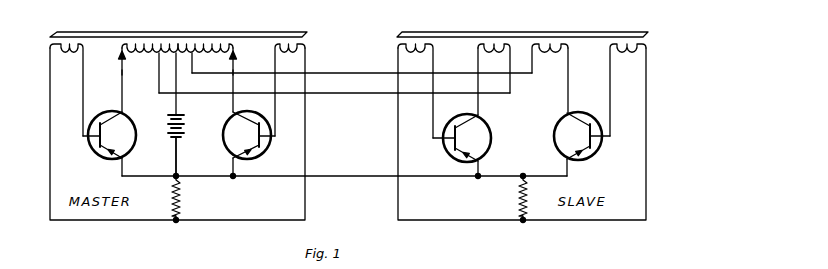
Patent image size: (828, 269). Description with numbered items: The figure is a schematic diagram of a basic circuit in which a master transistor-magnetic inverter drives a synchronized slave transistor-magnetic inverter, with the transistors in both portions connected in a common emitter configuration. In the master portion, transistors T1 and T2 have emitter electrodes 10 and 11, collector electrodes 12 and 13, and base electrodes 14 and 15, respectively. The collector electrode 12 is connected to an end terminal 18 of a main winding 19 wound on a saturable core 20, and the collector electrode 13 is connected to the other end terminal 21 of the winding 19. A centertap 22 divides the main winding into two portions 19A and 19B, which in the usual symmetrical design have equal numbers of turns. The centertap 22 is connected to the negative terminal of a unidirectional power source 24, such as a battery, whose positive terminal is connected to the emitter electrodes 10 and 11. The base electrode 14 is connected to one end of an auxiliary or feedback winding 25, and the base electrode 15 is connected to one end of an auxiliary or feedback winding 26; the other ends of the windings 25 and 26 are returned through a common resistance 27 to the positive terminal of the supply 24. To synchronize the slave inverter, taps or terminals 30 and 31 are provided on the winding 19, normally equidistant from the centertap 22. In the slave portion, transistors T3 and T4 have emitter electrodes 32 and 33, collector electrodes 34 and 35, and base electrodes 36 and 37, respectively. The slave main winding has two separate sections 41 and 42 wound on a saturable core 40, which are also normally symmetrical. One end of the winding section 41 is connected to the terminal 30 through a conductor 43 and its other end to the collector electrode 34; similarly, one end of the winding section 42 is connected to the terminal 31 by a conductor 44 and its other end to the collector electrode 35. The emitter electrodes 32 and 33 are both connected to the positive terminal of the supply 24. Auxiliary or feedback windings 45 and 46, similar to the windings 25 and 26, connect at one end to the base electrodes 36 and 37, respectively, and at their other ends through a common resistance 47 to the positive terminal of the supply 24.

The emitter electrode 10 is at (113, 161).
The emitter electrode 11 is at (247, 164).
The collector electrode 12 is at (118, 107).
The collector electrode 13 is at (240, 113).
The base electrode 14 is at (98, 122).
The base electrode 15 is at (273, 140).
The end terminal 18 is at (119, 56).
The main winding 19 is at (176, 43).
The winding portion 19A is at (149, 60).
The winding portion 19B is at (196, 57).
The saturable core 20 is at (221, 30).
The end terminal 21 is at (237, 54).
The centertap 22 is at (166, 83).
The unidirectional power source 24 is at (183, 139).
The auxiliary or feedback winding 25 is at (66, 54).
The auxiliary or feedback winding 26 is at (291, 52).
The common resistance 27 is at (182, 198).
The terminal 30 is at (158, 72).
The terminal 31 is at (192, 63).
The emitter electrode 32 is at (462, 158).
The emitter electrode 33 is at (579, 166).
The collector electrode 34 is at (470, 110).
The collector electrode 35 is at (585, 109).
The base electrode 36 is at (435, 135).
The base electrode 37 is at (602, 134).
The saturable core 40 is at (539, 34).
The winding section 41 is at (497, 55).
The winding section 42 is at (553, 55).
The conductor 43 is at (353, 95).
The conductor 44 is at (360, 72).
The auxiliary or feedback winding 45 is at (422, 54).
The auxiliary or feedback winding 46 is at (636, 57).
The common resistance 47 is at (518, 197).
The transistor T1 is at (88, 153).
The transistor T2 is at (268, 153).
The transistor T3 is at (475, 139).
The transistor T4 is at (587, 139).